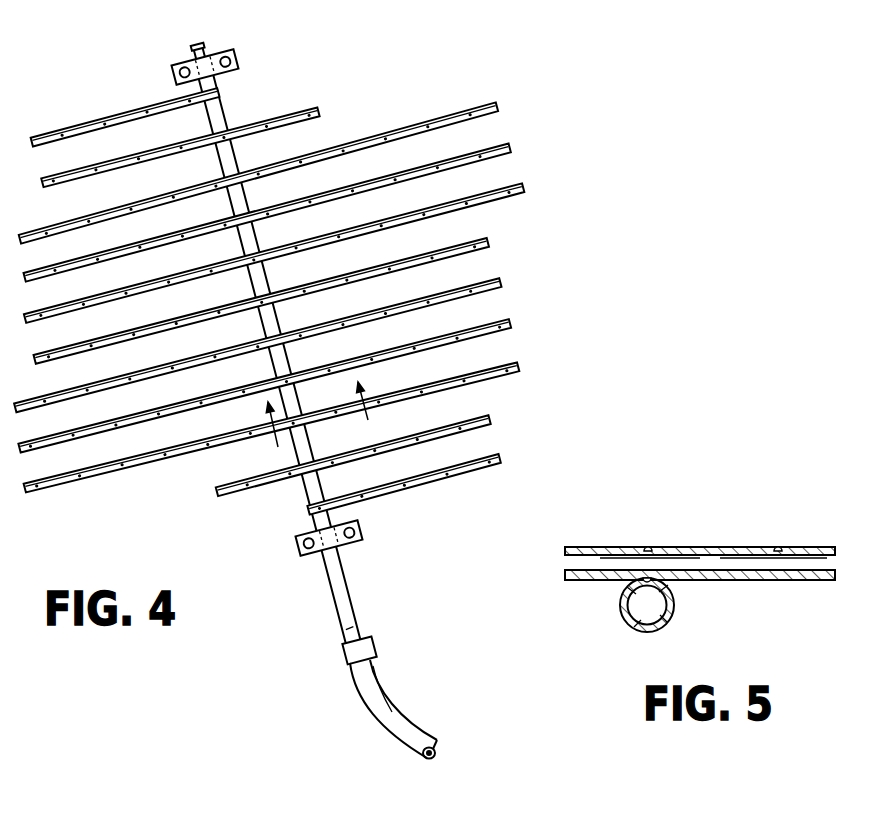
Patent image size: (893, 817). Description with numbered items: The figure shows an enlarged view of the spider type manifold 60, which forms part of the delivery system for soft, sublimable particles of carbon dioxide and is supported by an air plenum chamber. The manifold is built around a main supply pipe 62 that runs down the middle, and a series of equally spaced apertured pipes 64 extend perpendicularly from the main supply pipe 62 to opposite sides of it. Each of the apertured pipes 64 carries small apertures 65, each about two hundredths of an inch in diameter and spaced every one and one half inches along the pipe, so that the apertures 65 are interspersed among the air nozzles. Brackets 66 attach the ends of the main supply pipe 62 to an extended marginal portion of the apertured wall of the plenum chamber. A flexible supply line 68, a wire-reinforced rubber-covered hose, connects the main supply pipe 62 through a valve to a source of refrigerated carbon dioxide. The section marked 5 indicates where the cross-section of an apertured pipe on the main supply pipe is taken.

In FIG. 4, the spider type manifold 60 is at (295, 389).
In FIG. 4, the main supply pipe 62 is at (348, 593).
In FIG. 5, the main supply pipe 62 is at (622, 613).
In FIG. 4, the apertured pipes 64 is at (499, 108).
In FIG. 5, the apertured pipes 64 is at (725, 547).
In FIG. 4, the apertures 65 is at (470, 205).
In FIG. 5, the apertures 65 is at (648, 546).
In FIG. 4, the brackets 66 is at (240, 58).
In FIG. 4, the flexible supply line 68 is at (380, 697).
In FIG. 4, the section line 5- 5 is at (321, 428).